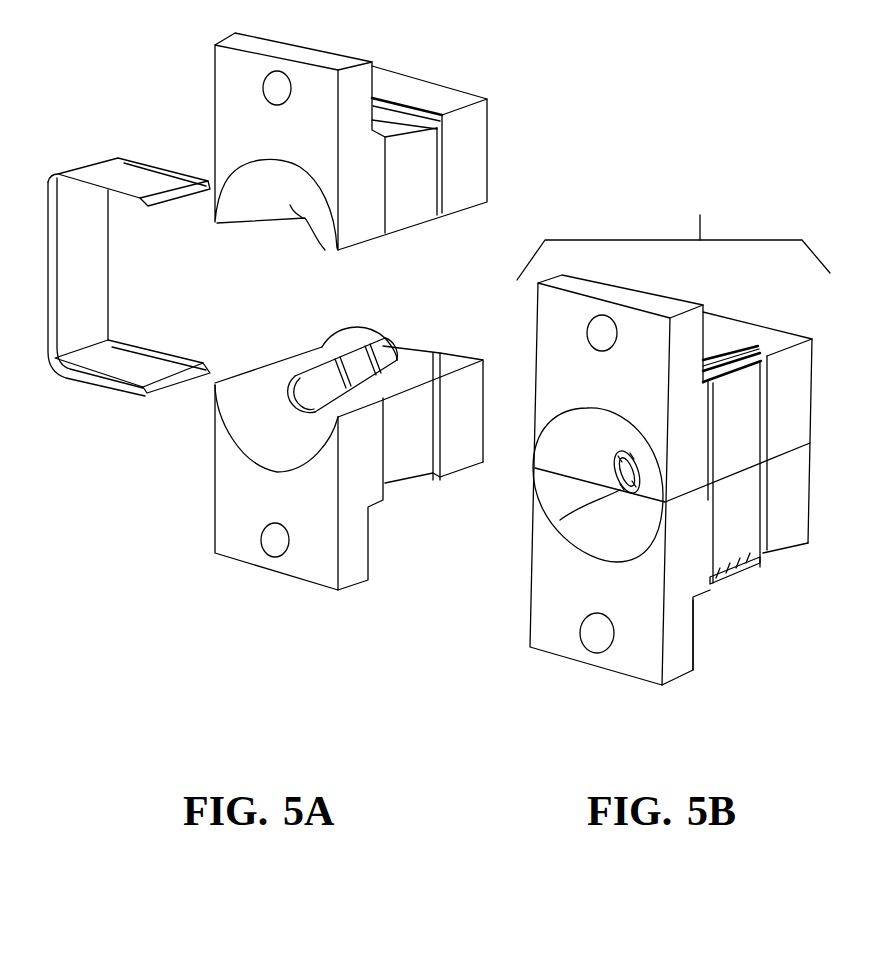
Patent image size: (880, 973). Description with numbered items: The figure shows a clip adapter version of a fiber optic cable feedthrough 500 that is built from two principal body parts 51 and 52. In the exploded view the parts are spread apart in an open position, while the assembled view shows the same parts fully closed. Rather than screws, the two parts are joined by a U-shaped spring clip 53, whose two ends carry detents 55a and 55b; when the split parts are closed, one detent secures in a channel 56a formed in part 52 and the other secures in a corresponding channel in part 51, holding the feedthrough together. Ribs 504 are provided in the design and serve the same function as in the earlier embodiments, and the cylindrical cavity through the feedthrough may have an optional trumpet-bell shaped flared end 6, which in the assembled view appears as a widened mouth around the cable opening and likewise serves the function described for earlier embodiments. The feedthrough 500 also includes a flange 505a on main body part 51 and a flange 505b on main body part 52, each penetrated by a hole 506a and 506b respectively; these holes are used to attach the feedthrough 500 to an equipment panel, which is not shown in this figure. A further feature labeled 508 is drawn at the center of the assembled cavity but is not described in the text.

In FIG. 5B, the fiber optic cable feedthrough 500 is at (641, 439).
In FIG. 5A, the principal part 51 is at (302, 582).
In FIG. 5A, the principal part 52 is at (373, 243).
In FIG. 5A, the spring clip 53 is at (132, 162).
In FIG. 5A, the detent 55a is at (142, 205).
In FIG. 5A, the detent 55b is at (145, 395).
In FIG. 5A, the channel 56a is at (407, 120).
In FIG. 5A, the ribs 504 is at (298, 380).
In FIG. 5A, the flange 505a is at (368, 537).
In FIG. 5B, the flange 505a is at (693, 600).
In FIG. 5A, the flange 505b is at (373, 63).
In FIG. 5B, the flange 505b is at (712, 314).
In FIG. 5A, the hole 506a is at (261, 535).
In FIG. 5B, the hole 506a is at (578, 645).
In FIG. 5B, the hole 506b is at (616, 322).
In FIG. 5B, the bore 508 is at (632, 494).
In FIG. 5B, the trumpet-bell shaped flared end 6 is at (570, 508).